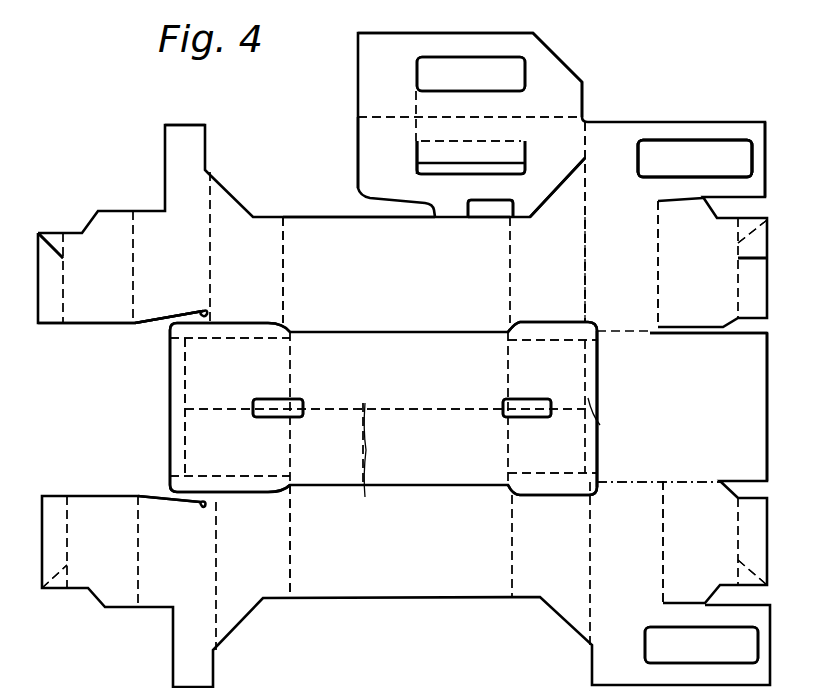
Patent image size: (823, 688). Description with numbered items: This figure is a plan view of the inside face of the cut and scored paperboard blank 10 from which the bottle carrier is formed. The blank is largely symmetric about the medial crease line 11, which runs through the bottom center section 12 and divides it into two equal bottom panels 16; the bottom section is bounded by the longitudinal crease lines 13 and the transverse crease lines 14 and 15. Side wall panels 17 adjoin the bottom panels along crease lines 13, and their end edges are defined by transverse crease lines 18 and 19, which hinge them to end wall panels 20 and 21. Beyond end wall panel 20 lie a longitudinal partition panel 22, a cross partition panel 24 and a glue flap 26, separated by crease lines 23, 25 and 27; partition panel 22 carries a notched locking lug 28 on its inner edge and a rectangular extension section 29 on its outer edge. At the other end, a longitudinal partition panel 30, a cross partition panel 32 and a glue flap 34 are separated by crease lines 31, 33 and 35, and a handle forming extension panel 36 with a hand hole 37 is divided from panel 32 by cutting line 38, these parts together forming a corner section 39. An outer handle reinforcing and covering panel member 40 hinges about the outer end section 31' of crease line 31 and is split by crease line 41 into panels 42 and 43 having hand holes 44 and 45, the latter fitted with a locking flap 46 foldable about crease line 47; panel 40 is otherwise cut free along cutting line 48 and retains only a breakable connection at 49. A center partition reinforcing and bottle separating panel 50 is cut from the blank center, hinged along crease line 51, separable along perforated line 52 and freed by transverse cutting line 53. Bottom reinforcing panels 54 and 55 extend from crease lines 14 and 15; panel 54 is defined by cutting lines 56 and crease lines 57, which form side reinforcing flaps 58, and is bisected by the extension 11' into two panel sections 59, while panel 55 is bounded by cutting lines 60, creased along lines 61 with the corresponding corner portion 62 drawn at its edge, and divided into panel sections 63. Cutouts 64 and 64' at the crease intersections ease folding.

The paperboard blank 10 is at (284, 119).
The medial horizontal crease line 11 is at (387, 423).
The extension of medial crease line 11' is at (386, 407).
The bottom center section 12 is at (389, 385).
The longitudinal crease lines 13 is at (416, 332).
The transverse crease line 14 is at (292, 367).
The transverse crease line 15 is at (506, 365).
The bottom panels 16 is at (503, 378).
The side wall panels 17 is at (386, 280).
The transverse crease line 18 is at (286, 262).
The transverse crease line 19 is at (508, 268).
The end wall forming panel 20 is at (234, 268).
The end wall forming panel 21 is at (537, 260).
The longitudinal partition panel 22 is at (161, 255).
The transverse crease line 23 is at (212, 192).
The cross partition panel 24 is at (84, 267).
The transverse crease line 25 is at (133, 312).
The glue flap 26 is at (47, 262).
The transverse crease line 27 is at (70, 316).
The locking lug 28 is at (201, 311).
The rectangular extension section 29 is at (183, 128).
The longitudinal partition panel 30 is at (609, 262).
The transverse crease line 31 is at (667, 365).
The outer end section of crease line 31 31' is at (604, 205).
The cross partition panel 32 is at (686, 278).
The transverse crease line 33 is at (661, 243).
The glue flap 34 is at (762, 230).
The transverse crease line 35 is at (762, 258).
The handle forming extension panel 36 is at (645, 126).
The hand hole 37 is at (685, 142).
The longitudinal cutting line 38 is at (676, 200).
The corner section 39 is at (778, 131).
The outer handle reinforcing and covering panel member 40 is at (584, 64).
The longitudinal crease line 41 is at (362, 115).
The panel 42 is at (498, 46).
The panel 43 is at (364, 153).
The hand hole 44 is at (441, 58).
The hand hole 45 is at (425, 172).
The locking flap 46 is at (471, 156).
The crease line 47 is at (445, 141).
The cutting line 48 is at (566, 180).
The breakable connection 49 is at (455, 219).
The center partition reinforcing and bottle separating panel 50 is at (672, 405).
The longitudinal crease line 51 is at (652, 336).
The perforated line 52 is at (660, 481).
The transverse cutting line 53 is at (599, 393).
The bottom reinforcing flap forming panel 54 is at (177, 437).
The bottom reinforcing flap forming panel 55 is at (599, 352).
The longitudinal cutting lines 56 is at (235, 320).
The longitudinal crease lines 57 is at (237, 339).
The side reinforcing flaps 58 is at (275, 325).
The panel sections 59 is at (178, 383).
The cutting lines 60 is at (548, 320).
The longitudinal crease lines 61 is at (553, 341).
The rounded corner 62 is at (583, 326).
The panel sections 63 is at (600, 425).
The cutout 64 is at (287, 421).
The cutout 64' is at (507, 422).